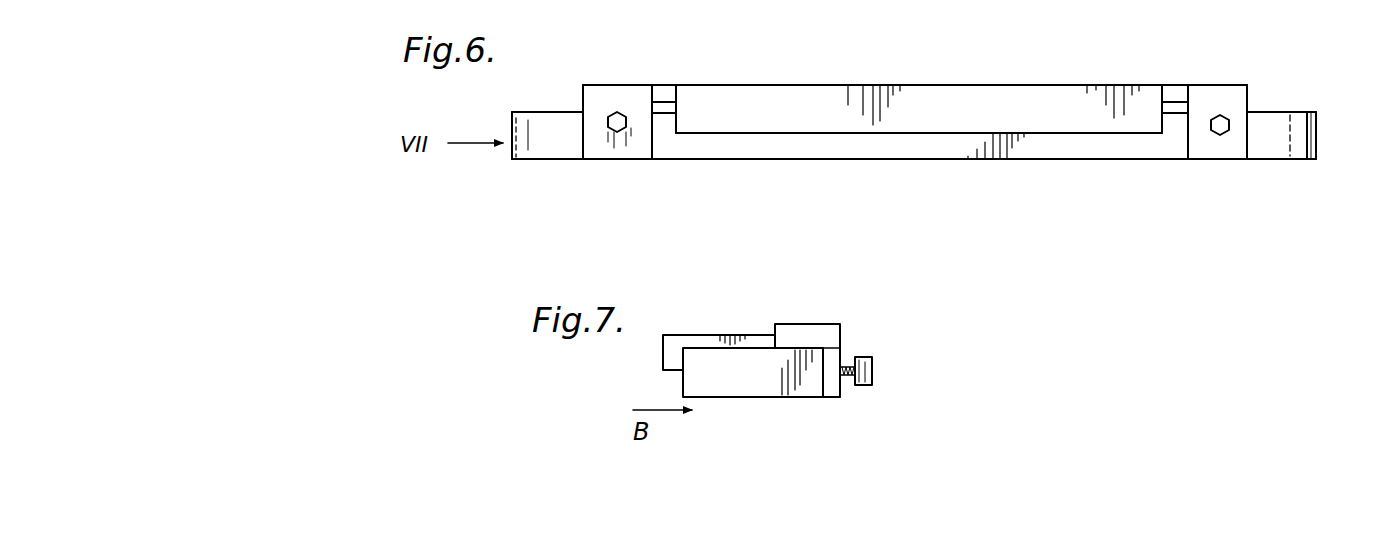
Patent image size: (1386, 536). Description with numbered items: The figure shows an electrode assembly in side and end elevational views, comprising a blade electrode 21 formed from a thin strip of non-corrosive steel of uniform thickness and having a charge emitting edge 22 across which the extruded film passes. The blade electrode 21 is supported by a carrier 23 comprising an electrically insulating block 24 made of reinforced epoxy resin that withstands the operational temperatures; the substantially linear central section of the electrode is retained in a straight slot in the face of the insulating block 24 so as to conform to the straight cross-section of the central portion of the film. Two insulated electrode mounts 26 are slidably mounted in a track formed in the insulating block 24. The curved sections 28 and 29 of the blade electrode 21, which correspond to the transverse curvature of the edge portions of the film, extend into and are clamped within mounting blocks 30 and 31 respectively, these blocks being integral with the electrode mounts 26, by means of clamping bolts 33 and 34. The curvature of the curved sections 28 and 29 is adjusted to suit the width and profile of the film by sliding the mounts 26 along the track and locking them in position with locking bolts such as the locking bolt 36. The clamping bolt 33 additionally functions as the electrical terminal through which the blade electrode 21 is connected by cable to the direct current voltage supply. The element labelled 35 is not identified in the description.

In FIG. 6, the blade electrode 21 is at (1275, 122).
In FIG. 7, the blade electrode 21 is at (700, 378).
In FIG. 6, the charge emitting edge 22 is at (775, 162).
In FIG. 7, the charge emitting edge 22 is at (781, 398).
In FIG. 6, the carrier 23 is at (1017, 84).
In FIG. 7, the carrier 23 is at (745, 334).
In FIG. 6, the insulating block 24 is at (730, 100).
In FIG. 7, the insulating block 24 is at (695, 340).
In FIG. 6, the insulated electrode mounts 26 is at (664, 93).
In FIG. 7, the insulated electrode mounts 26 is at (820, 332).
In FIG. 6, the curved section 28 is at (537, 125).
In FIG. 6, the curved section 29 is at (1318, 120).
In FIG. 6, the mounting block 30 is at (616, 150).
In FIG. 7, the mounting block 30 is at (838, 350).
In FIG. 6, the mounting block 31 is at (1228, 146).
In FIG. 6, the clamping bolt 33 is at (614, 112).
In FIG. 7, the clamping bolt 33 is at (873, 372).
In FIG. 6, the clamping bolt 34 is at (1217, 115).
In FIG. 6, the end face 35 is at (510, 142).
In FIG. 6, the locking bolt 36 is at (1320, 145).